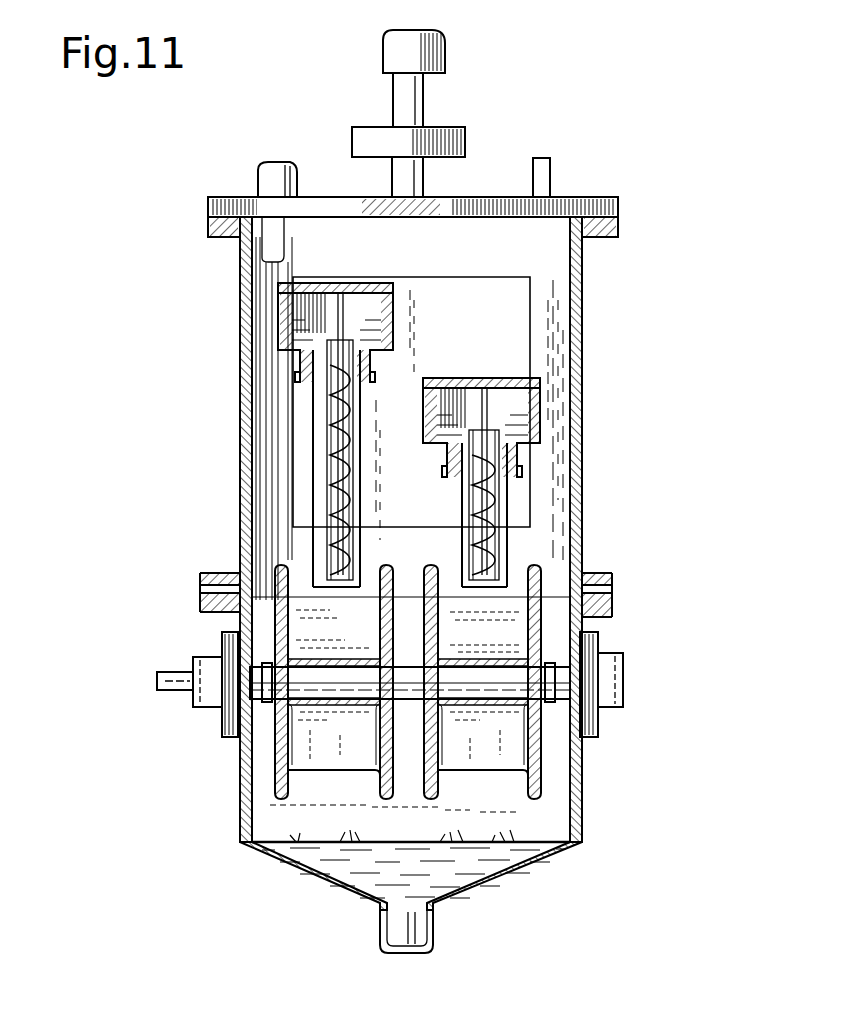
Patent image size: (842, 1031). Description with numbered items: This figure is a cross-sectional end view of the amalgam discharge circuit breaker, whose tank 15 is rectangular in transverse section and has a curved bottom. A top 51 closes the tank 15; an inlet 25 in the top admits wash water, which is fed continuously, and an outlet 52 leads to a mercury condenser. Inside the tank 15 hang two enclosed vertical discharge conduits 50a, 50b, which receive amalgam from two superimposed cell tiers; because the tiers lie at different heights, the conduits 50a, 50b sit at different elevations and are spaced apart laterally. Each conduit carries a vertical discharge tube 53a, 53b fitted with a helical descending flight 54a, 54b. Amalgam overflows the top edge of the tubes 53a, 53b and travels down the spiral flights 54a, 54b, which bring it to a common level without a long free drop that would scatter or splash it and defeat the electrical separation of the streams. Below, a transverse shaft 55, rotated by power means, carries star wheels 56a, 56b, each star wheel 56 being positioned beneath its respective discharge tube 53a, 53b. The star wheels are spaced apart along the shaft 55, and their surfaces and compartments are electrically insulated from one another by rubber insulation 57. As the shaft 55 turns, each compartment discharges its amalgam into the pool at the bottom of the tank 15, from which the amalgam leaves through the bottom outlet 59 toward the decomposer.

The amalgam discharge circuit breaker tank 15 is at (232, 472).
The inlet 25 is at (258, 180).
The top 51 is at (464, 197).
The outlet 52 is at (398, 101).
The discharge conduit 50a is at (388, 332).
The discharge conduit 50b is at (540, 422).
The vertical discharge tube 53a is at (358, 403).
The vertical discharge tube 53b is at (458, 488).
The helical descending flight 54a is at (357, 453).
The helical descending flight 54b is at (470, 512).
The transverse shaft 55 is at (190, 672).
The star wheel 56 is at (273, 767).
The star wheel 56a is at (510, 613).
The star wheel 56b is at (345, 660).
The rubber insulation 57 is at (392, 567).
The outlet 59 is at (400, 912).